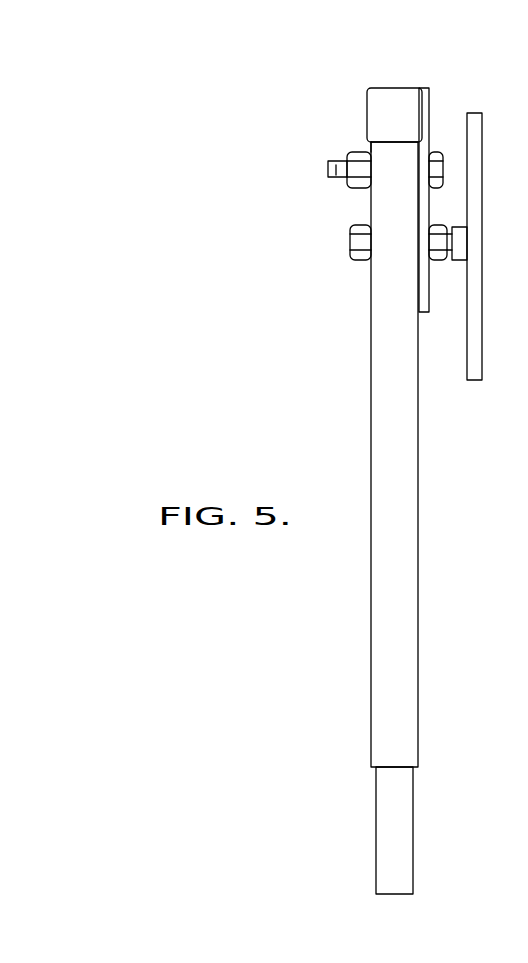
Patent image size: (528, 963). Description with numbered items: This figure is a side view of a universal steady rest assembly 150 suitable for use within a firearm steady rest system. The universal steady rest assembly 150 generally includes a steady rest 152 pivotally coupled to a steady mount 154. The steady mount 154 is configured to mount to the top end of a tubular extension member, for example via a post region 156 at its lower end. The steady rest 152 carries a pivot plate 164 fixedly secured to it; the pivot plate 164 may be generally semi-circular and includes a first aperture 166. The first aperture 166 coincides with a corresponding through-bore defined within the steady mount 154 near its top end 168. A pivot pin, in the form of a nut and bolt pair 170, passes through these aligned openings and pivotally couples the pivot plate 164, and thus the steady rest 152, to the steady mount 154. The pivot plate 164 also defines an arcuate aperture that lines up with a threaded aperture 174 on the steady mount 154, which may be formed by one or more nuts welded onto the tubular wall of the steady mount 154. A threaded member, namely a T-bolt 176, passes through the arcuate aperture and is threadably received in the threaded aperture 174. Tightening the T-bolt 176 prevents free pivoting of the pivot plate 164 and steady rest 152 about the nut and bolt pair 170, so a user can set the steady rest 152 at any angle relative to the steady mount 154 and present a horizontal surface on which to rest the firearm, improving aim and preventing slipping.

The universal steady rest assembly 150 is at (227, 318).
The steady rest 152 is at (393, 88).
The steady mount 154 is at (418, 643).
The post region 156 is at (377, 849).
The pivot plate 164 is at (422, 92).
The first aperture 166 is at (428, 177).
The top end 168 is at (392, 141).
The nut and bolt pair 170 is at (358, 181).
The threaded aperture 174 is at (437, 255).
The T-bolt 176 is at (466, 317).